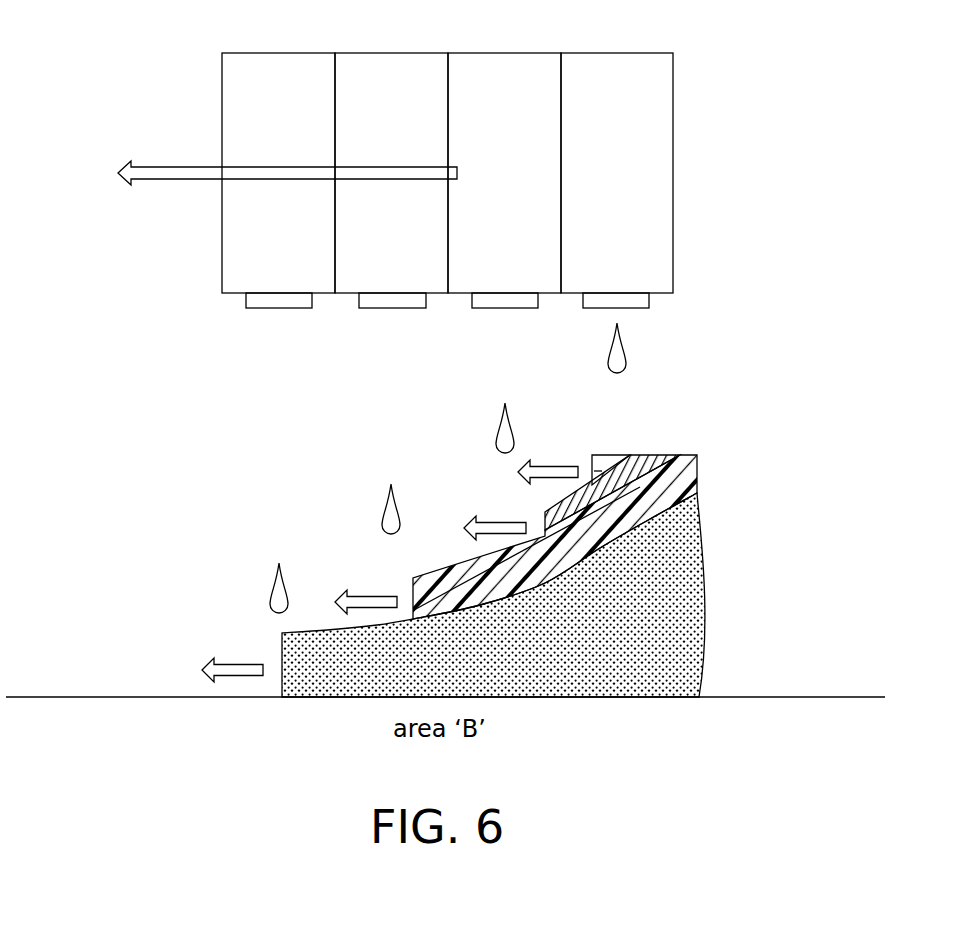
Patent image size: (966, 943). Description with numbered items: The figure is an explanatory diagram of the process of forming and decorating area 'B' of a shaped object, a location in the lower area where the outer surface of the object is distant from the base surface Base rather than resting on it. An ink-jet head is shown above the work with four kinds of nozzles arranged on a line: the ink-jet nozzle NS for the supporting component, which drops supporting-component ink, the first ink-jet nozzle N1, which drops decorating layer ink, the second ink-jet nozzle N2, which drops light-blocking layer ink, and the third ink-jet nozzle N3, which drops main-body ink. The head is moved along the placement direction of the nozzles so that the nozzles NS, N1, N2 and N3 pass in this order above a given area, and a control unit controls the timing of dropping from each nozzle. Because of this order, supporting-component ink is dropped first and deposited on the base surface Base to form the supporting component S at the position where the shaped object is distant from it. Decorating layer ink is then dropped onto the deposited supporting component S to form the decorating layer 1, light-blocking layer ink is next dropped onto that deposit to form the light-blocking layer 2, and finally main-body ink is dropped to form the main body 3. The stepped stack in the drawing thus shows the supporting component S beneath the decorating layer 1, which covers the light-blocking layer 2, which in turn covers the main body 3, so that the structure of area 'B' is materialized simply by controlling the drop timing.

The ink-jet nozzle for the supporting component NS is at (279, 67).
The first ink-jet nozzle N1 is at (392, 67).
The second ink-jet nozzle N2 is at (506, 67).
The third ink-jet nozzle N3 is at (618, 67).
The decorating layer 1 is at (677, 484).
The light-blocking layer 2 is at (656, 460).
The main body 3 is at (614, 460).
The supporting component S is at (677, 616).
The base surface Base is at (843, 697).